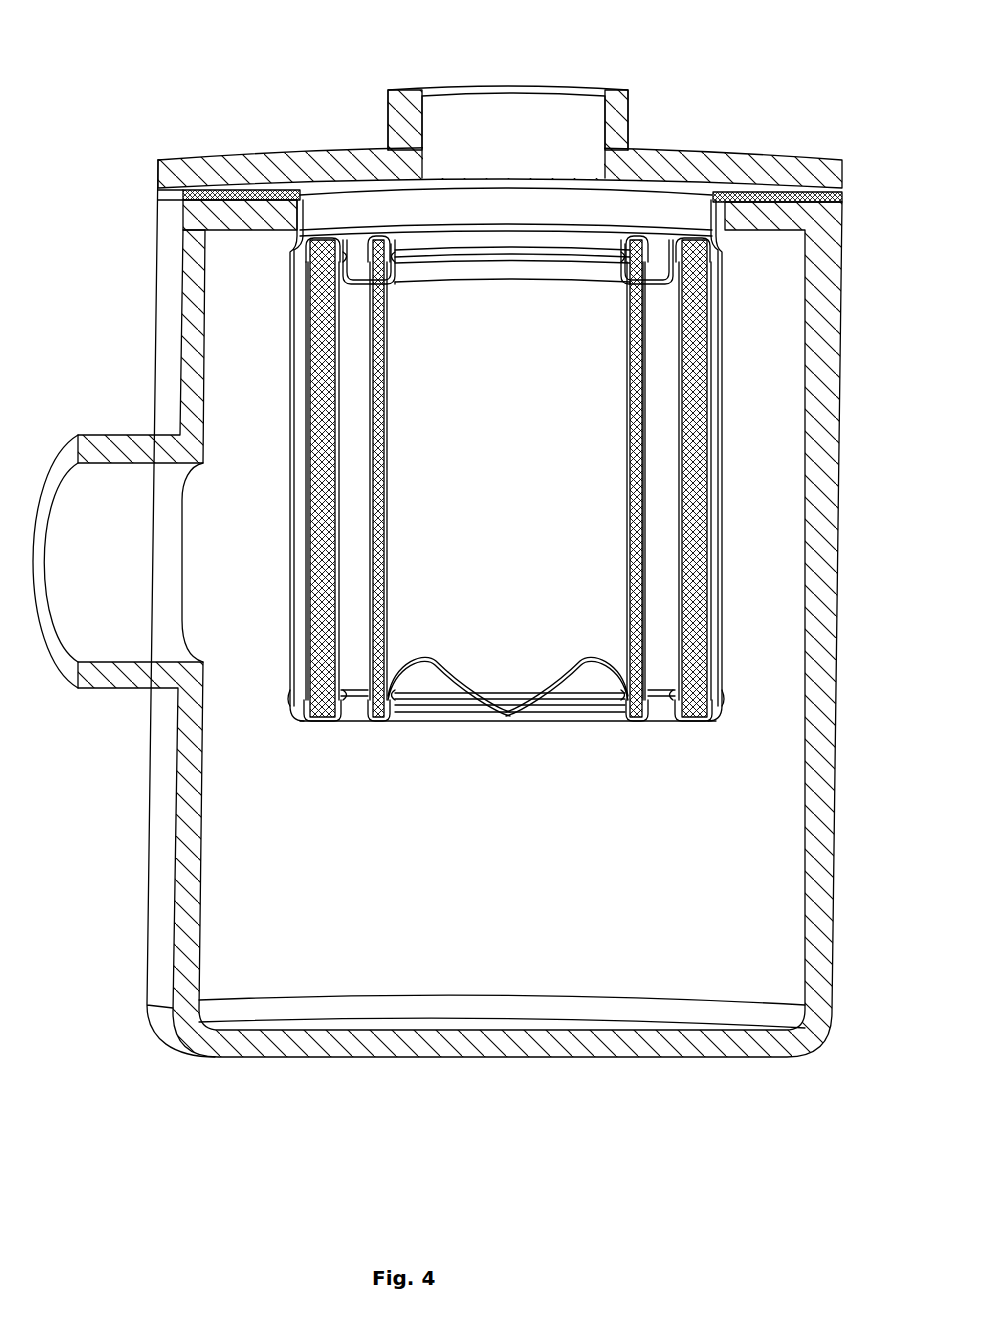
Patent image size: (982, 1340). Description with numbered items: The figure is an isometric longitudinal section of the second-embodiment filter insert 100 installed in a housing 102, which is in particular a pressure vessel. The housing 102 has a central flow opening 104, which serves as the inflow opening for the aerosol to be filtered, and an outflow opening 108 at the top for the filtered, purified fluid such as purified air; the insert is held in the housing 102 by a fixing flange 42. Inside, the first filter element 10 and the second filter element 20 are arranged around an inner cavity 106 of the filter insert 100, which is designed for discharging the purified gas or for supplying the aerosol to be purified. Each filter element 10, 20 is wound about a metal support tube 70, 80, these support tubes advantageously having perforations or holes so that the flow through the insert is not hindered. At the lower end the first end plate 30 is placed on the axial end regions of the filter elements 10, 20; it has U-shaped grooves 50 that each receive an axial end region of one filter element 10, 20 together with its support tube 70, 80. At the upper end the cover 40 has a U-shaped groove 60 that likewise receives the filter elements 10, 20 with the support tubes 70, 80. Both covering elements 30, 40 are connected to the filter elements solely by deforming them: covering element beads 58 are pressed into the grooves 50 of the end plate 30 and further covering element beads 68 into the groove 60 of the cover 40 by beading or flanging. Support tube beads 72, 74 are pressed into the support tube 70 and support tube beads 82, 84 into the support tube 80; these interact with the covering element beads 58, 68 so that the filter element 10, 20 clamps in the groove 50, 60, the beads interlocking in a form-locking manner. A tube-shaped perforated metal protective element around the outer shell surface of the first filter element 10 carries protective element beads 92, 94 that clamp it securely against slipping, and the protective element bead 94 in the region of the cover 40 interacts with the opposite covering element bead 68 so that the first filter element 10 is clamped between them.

The filter insert 100 is at (208, 63).
The housing 102 is at (513, 917).
The central flow opening 104 is at (120, 557).
The inner cavity 106 is at (510, 487).
The outflow opening 108 is at (513, 149).
The first filter element 10 is at (330, 545).
The second filter element 20 is at (382, 605).
The first end plate 30 is at (515, 701).
The cover 40 is at (517, 225).
The fixing flange 42 is at (787, 203).
The U-shaped groove 50 is at (320, 719).
The covering element bead 58 is at (390, 705).
The U-shaped groove 60 is at (394, 241).
The further covering element bead 68 is at (345, 258).
The support tube 70 is at (338, 432).
The support tube bead 72 is at (342, 690).
The additional support tube bead 74 is at (308, 282).
The additional support tube 80 is at (385, 430).
The support tube bead 82 is at (628, 682).
The additional support tube bead 84 is at (640, 268).
The protective element bead 92 is at (298, 705).
The additional protective element bead 94 is at (300, 252).